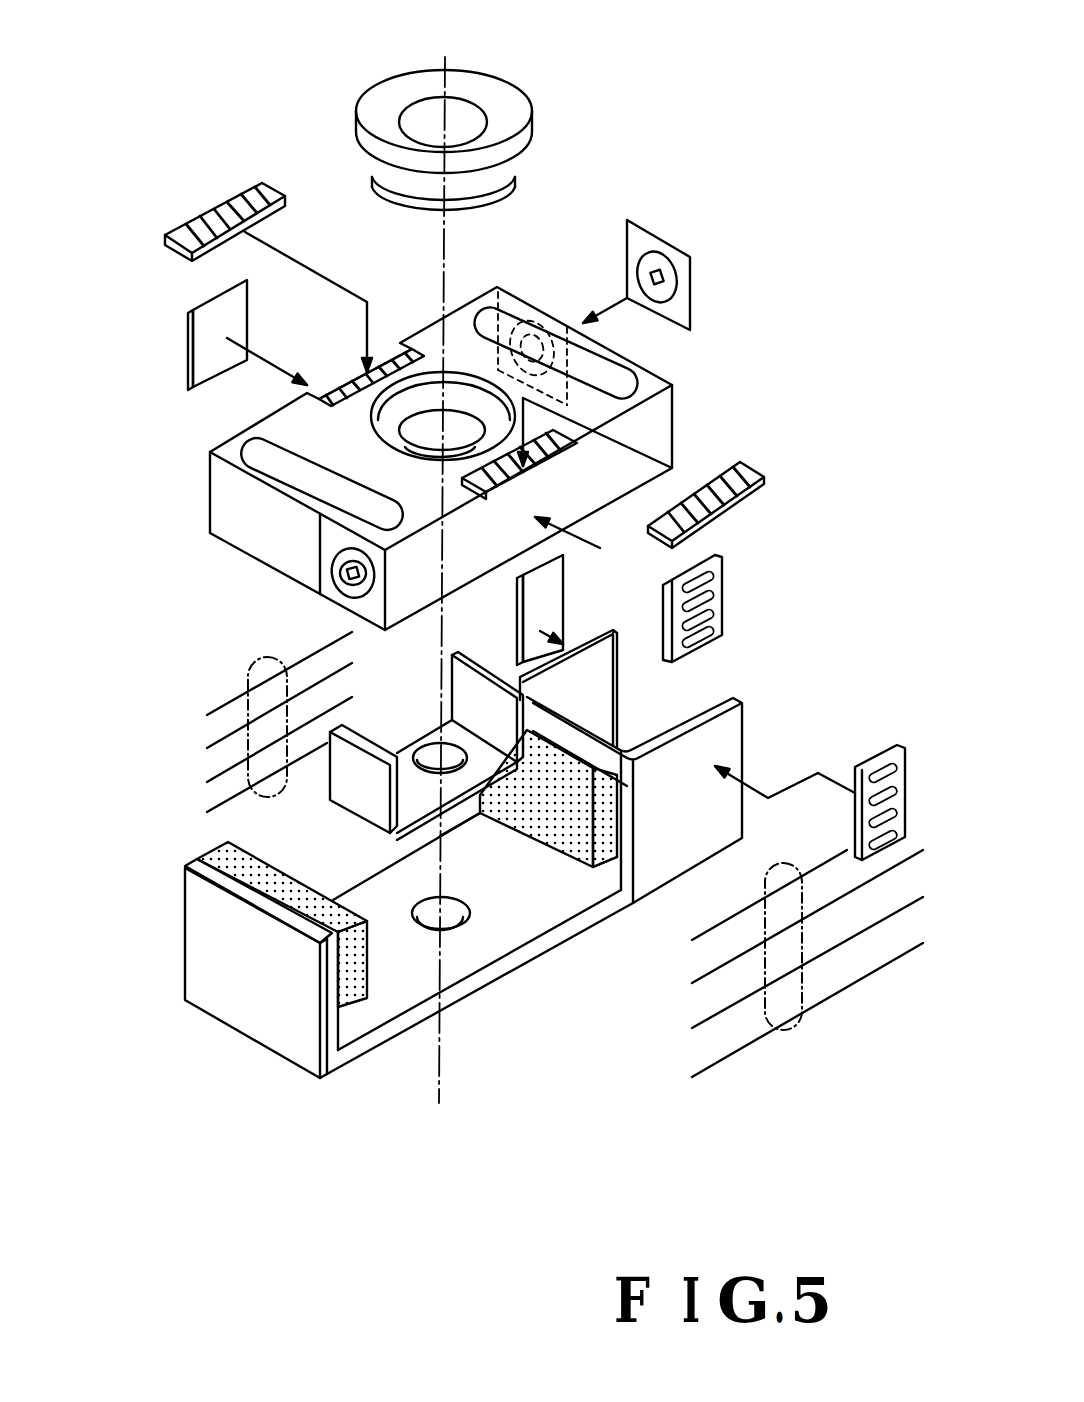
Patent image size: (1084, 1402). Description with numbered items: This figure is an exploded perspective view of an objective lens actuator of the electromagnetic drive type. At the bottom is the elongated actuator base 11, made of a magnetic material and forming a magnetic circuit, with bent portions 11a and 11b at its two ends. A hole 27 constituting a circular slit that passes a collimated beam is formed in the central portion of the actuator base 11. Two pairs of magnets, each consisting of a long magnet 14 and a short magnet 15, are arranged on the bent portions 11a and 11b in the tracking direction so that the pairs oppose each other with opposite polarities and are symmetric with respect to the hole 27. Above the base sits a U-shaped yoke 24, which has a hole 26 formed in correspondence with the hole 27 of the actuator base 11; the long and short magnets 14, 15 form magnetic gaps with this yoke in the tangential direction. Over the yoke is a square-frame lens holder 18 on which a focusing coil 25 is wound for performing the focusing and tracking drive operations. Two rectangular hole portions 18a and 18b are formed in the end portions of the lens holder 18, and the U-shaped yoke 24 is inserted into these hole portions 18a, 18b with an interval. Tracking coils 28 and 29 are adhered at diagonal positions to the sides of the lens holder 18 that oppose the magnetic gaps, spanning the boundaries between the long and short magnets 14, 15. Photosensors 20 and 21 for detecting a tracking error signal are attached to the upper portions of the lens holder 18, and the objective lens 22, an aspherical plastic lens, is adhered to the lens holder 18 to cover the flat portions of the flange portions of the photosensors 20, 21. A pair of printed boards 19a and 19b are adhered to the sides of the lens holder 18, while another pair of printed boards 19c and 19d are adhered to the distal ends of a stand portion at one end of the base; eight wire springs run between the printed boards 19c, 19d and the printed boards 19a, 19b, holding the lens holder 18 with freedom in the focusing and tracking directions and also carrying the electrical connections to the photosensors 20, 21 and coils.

The objective lens 22 is at (490, 88).
The photosensor 21 is at (238, 200).
The tracking coil 29 is at (643, 240).
The printed board 19b is at (204, 350).
The lens holder 18 is at (313, 430).
The focusing coil 25 is at (640, 432).
The rectangular hole portion 18b is at (600, 374).
The rectangular hole portion 18a is at (312, 477).
The photosensor 20 is at (755, 472).
The tracking coil 28 is at (332, 578).
The printed board 19d is at (552, 600).
The printed board 19a is at (720, 590).
The printed board 19c is at (875, 748).
The U-shaped yoke 24 is at (352, 782).
The actuator base 11 is at (420, 916).
The bent portion 11a is at (222, 937).
The bent portion 11b is at (638, 825).
The long magnet 14 is at (228, 855).
The short magnet 15 is at (500, 820).
The hole 26 is at (480, 820).
The hole 27 is at (440, 925).